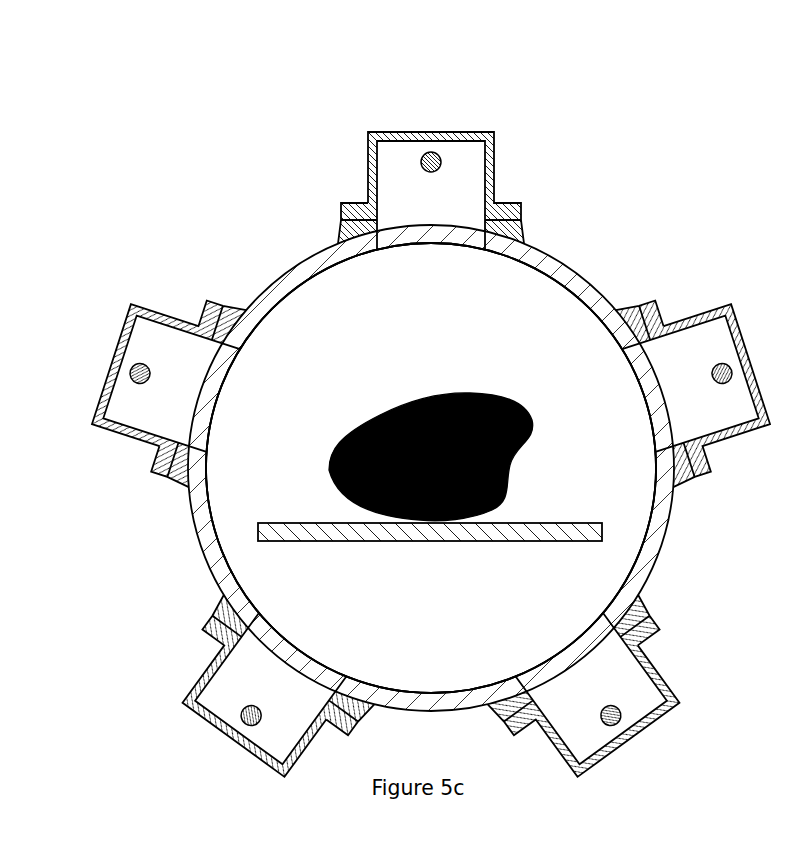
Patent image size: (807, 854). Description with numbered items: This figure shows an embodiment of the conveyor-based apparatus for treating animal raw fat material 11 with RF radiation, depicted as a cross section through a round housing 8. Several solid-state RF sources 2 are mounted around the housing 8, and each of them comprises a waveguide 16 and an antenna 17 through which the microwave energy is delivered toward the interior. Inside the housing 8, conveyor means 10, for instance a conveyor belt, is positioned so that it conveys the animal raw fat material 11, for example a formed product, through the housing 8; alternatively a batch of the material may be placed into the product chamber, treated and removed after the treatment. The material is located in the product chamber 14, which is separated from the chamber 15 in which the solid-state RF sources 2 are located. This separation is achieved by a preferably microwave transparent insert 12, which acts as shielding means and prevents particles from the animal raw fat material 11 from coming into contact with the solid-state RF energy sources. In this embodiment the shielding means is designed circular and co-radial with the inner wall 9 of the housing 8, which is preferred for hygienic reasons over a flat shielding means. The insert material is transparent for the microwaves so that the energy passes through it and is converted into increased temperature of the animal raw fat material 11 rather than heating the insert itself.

The solid-state RF source 2 is at (432, 148).
The housing 8 is at (237, 310).
The inner wall 9 is at (328, 264).
The conveyor means 10 is at (305, 535).
The animal raw fat material 11 is at (499, 395).
The microwave transparent insert 12 is at (656, 398).
The product chamber 14 is at (567, 328).
The chamber 15 is at (431, 468).
The waveguide 16 is at (431, 148).
The antenna 17 is at (474, 109).